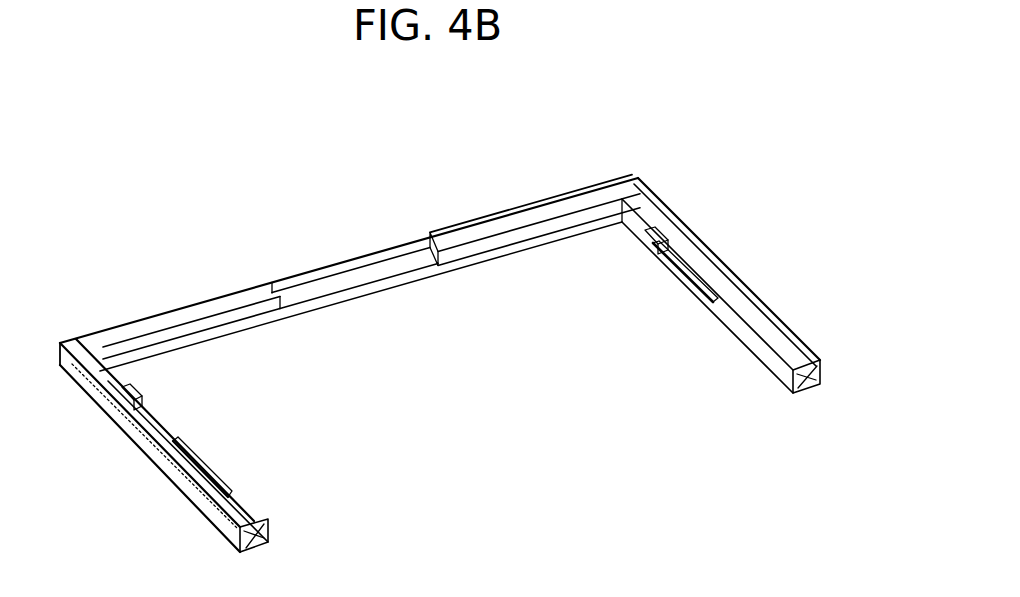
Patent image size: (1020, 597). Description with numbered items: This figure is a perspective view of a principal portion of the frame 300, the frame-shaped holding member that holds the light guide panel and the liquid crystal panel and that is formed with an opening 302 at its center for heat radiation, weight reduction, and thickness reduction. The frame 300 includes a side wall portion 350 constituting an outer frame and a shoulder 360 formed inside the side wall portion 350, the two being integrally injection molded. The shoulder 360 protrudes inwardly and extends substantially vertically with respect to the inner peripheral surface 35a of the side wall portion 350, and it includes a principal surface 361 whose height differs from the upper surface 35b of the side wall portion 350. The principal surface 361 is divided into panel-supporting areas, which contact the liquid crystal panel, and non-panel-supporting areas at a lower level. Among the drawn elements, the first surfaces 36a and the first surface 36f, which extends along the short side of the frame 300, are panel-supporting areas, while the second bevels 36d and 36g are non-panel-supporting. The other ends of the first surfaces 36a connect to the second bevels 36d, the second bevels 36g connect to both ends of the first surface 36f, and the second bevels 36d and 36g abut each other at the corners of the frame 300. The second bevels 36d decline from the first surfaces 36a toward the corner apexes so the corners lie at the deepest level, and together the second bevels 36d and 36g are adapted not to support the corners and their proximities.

The frame 300 is at (103, 179).
The opening 302 is at (780, 375).
The side wall portion 350 is at (706, 243).
The inner peripheral surface 35a is at (757, 313).
The upper surface 35b is at (697, 235).
The shoulder 360 is at (786, 357).
The principal surface 361 is at (800, 363).
The first surface 36a is at (227, 491).
The second bevel 36d is at (120, 388).
The first surface 36f is at (400, 258).
The second bevel 36g is at (124, 350).